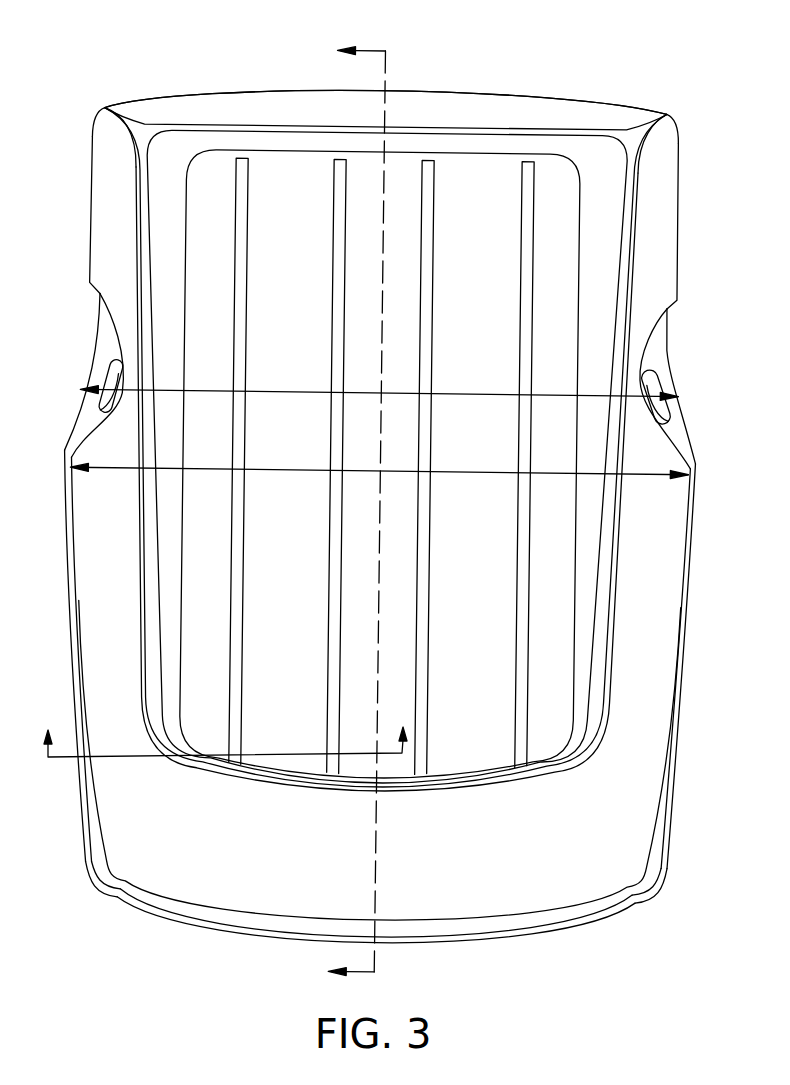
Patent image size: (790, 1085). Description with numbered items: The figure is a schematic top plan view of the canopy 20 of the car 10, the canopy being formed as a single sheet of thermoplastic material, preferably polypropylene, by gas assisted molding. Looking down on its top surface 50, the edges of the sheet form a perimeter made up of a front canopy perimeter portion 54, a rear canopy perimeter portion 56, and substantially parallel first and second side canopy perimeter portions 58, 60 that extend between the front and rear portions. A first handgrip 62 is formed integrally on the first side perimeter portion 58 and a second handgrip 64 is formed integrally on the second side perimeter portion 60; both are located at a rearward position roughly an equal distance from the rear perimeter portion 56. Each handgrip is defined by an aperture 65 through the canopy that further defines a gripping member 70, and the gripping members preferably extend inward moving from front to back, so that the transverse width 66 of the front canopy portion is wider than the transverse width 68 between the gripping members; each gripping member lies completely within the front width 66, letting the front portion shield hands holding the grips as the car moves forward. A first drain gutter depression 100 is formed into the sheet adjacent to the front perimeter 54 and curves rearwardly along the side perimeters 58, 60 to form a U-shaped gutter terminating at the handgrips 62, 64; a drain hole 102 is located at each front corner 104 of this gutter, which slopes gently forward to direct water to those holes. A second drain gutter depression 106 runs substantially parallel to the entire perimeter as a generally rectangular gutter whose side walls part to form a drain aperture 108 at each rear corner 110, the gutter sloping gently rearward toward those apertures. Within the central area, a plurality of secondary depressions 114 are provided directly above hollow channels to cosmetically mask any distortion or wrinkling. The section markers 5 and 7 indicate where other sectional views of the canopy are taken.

The panel assembly 10 is at (620, 260).
The canopy 20 is at (603, 88).
The top surface 50 is at (462, 231).
The front canopy perimeter portion 54 is at (543, 937).
The rear canopy perimeter portion 56 is at (480, 88).
The first side canopy perimeter portion 58 is at (65, 510).
The second side canopy perimeter portion 60 is at (690, 517).
The first handgrip 62 is at (98, 342).
The second handgrip 64 is at (667, 352).
The aperture 65 is at (100, 403).
The transverse width of the front portion of canopy 66 is at (477, 477).
The transverse width between gripping members 68 is at (478, 397).
The gripping member 70 is at (97, 370).
The first drain gutter depression 100 is at (85, 698).
The drain hole 102 is at (107, 892).
The front corner 104 is at (78, 896).
The second drain gutter depression 106 is at (147, 255).
The drain aperture 108 is at (113, 116).
The rear corner 110 is at (147, 85).
The secondary depressions 114 is at (340, 260).
The section line 5- 5 is at (344, 512).
The section line 7- 7 is at (223, 720).